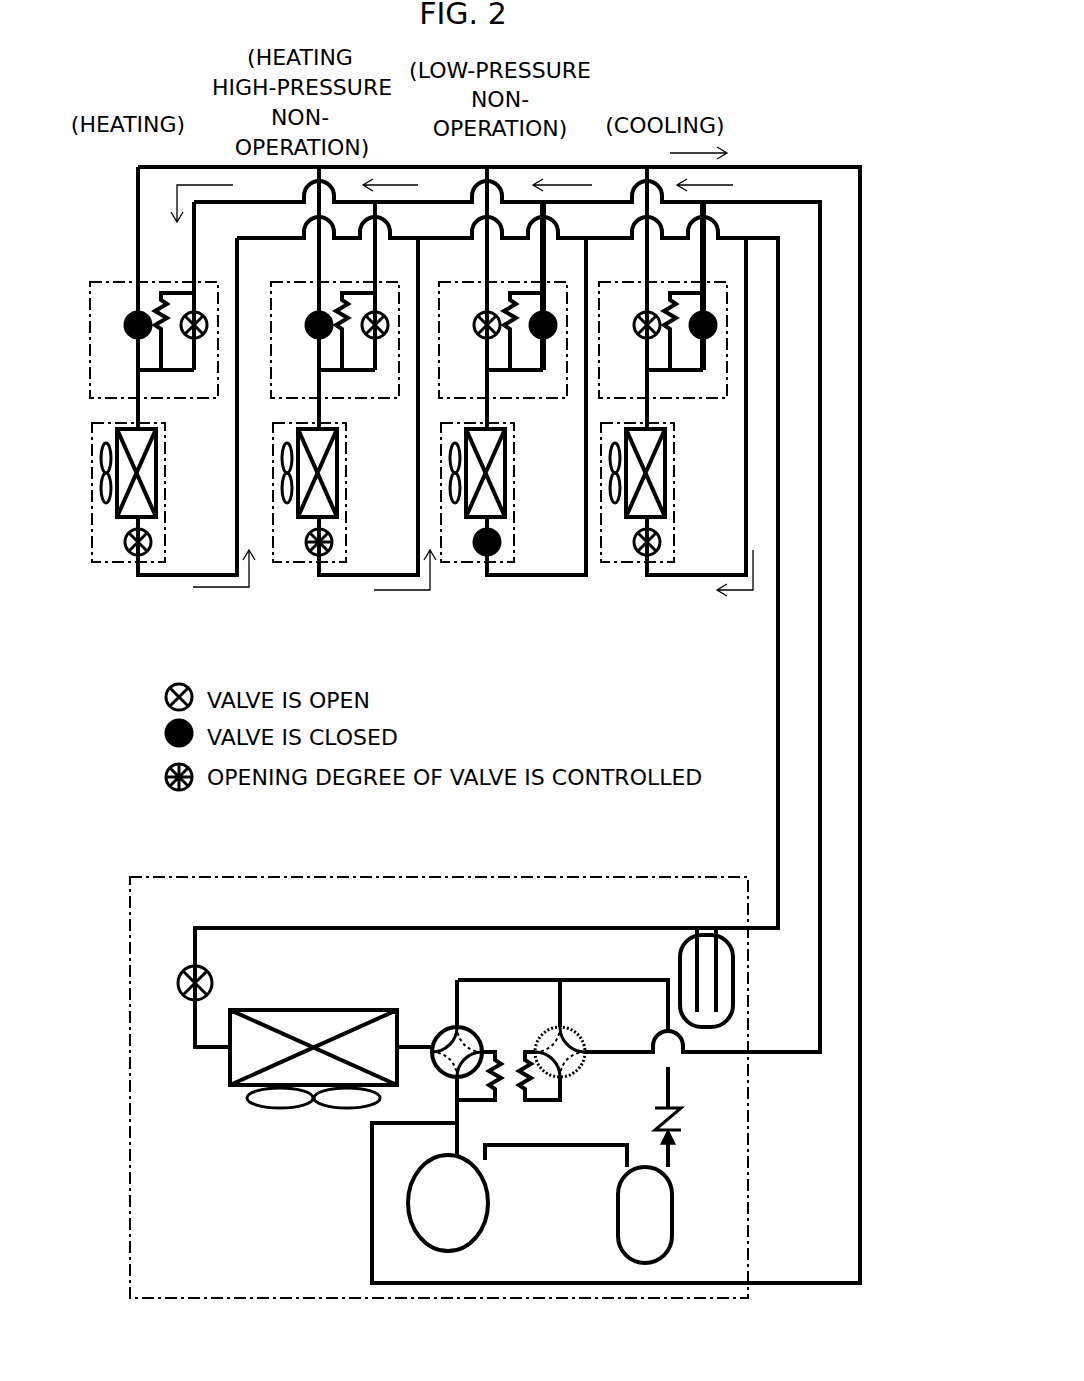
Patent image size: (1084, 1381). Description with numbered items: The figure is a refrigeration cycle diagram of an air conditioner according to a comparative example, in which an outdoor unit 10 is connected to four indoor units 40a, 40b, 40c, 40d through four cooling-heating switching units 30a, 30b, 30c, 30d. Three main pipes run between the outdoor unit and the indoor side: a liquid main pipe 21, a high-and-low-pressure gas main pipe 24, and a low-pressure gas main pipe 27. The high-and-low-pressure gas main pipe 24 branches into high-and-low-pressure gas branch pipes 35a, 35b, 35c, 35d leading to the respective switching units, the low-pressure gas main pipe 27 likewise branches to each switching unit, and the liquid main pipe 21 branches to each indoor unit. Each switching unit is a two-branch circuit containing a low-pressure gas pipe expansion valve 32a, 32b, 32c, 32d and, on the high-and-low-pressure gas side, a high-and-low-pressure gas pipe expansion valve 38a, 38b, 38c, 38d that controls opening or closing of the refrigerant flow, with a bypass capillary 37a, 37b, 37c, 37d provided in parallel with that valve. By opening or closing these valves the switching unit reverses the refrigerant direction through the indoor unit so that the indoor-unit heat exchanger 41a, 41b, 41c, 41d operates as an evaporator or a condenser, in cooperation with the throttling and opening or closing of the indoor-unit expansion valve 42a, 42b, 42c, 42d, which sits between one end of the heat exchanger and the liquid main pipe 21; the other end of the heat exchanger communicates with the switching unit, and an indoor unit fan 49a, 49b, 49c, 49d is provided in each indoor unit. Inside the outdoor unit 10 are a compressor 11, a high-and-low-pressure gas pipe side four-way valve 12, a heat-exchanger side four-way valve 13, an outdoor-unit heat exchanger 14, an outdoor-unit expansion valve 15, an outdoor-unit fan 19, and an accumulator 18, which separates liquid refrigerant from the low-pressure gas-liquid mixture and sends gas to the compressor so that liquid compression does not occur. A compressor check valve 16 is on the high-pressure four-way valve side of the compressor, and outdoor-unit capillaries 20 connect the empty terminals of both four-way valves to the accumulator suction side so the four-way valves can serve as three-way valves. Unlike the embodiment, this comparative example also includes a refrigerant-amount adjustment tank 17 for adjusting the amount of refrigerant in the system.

The outdoor unit 10 is at (130, 1080).
The compressor 11 is at (672, 1213).
The high-and-low-pressure gas pipe side four-way valve 12 is at (575, 1035).
The heat-exchanger side four-way valve 13 is at (440, 1028).
The outdoor-unit heat exchanger 14 is at (228, 1071).
The outdoor-unit expansion valve 15 is at (212, 980).
The compressor check valve 16 is at (690, 1118).
The refrigerant-amount adjustment tank 17 is at (707, 935).
The accumulator 18 is at (468, 1245).
The outdoor-unit fan 19 is at (283, 1108).
The outdoor-unit capillaries 20 is at (496, 1082).
The liquid main pipe 21 is at (778, 508).
The high-and-low-pressure gas main pipe 24 is at (820, 571).
The low-pressure gas main pipe 27 is at (857, 625).
The cooling-heating switching unit 30a is at (145, 281).
The cooling-heating switching unit 30b is at (326, 281).
The cooling-heating switching unit 30c is at (494, 281).
The cooling-heating switching unit 30d is at (654, 281).
The low-pressure gas pipe expansion valve 32a is at (136, 340).
The low-pressure gas pipe expansion valve 32b is at (317, 340).
The low-pressure gas pipe expansion valve 32c is at (485, 340).
The low-pressure gas pipe expansion valve 32d is at (645, 340).
The high-and-low-pressure gas branch pipe 35a is at (197, 207).
The high-and-low-pressure gas branch pipe 35b is at (378, 207).
The high-and-low-pressure gas branch pipe 35c is at (547, 207).
The high-and-low-pressure gas branch pipe 35d is at (707, 207).
The bypass capillary 37a is at (159, 314).
The bypass capillary 37b is at (340, 314).
The bypass capillary 37c is at (508, 314).
The bypass capillary 37d is at (668, 314).
The high-and-low-pressure gas pipe expansion valve 38a is at (197, 338).
The high-and-low-pressure gas pipe expansion valve 38b is at (378, 338).
The high-and-low-pressure gas pipe expansion valve 38c is at (546, 338).
The high-and-low-pressure gas pipe expansion valve 38d is at (706, 338).
The indoor unit 40a is at (108, 563).
The indoor unit 40b is at (289, 563).
The indoor unit 40c is at (457, 563).
The indoor unit 40d is at (617, 563).
The indoor-unit heat exchanger 41a is at (156, 493).
The indoor-unit heat exchanger 41b is at (337, 493).
The indoor-unit heat exchanger 41c is at (505, 493).
The indoor-unit heat exchanger 41d is at (665, 493).
The indoor-unit expansion valve 42a is at (150, 542).
The indoor-unit expansion valve 42b is at (331, 542).
The indoor-unit expansion valve 42c is at (499, 542).
The indoor-unit expansion valve 42d is at (659, 542).
The indoor unit fan 49a is at (106, 503).
The indoor unit fan 49b is at (287, 503).
The indoor unit fan 49c is at (455, 503).
The indoor unit fan 49d is at (615, 503).